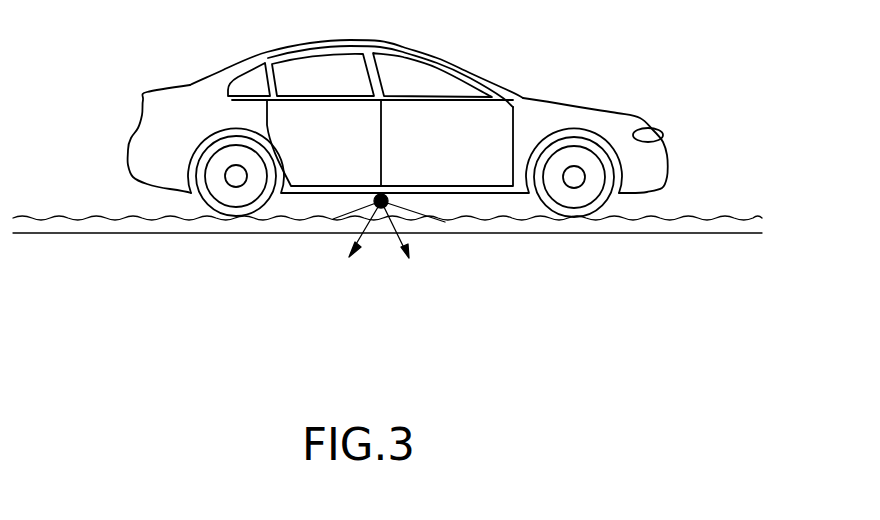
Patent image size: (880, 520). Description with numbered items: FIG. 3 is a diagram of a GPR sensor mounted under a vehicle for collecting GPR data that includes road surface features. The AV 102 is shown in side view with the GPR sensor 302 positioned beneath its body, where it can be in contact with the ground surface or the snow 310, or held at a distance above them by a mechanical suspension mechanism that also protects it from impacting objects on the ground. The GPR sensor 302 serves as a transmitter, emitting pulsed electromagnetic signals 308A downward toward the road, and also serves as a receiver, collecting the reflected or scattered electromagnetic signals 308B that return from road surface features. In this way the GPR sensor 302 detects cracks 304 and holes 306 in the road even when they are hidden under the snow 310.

The AV 102 is at (497, 86).
The GPR sensor 302 is at (372, 143).
The cracks 304 is at (40, 235).
The holes 306 is at (410, 250).
The pulsed electromagnetic signals 308A is at (355, 210).
The reflected or scattered electromagnetic signals 308B is at (381, 208).
The snow 310 is at (747, 219).